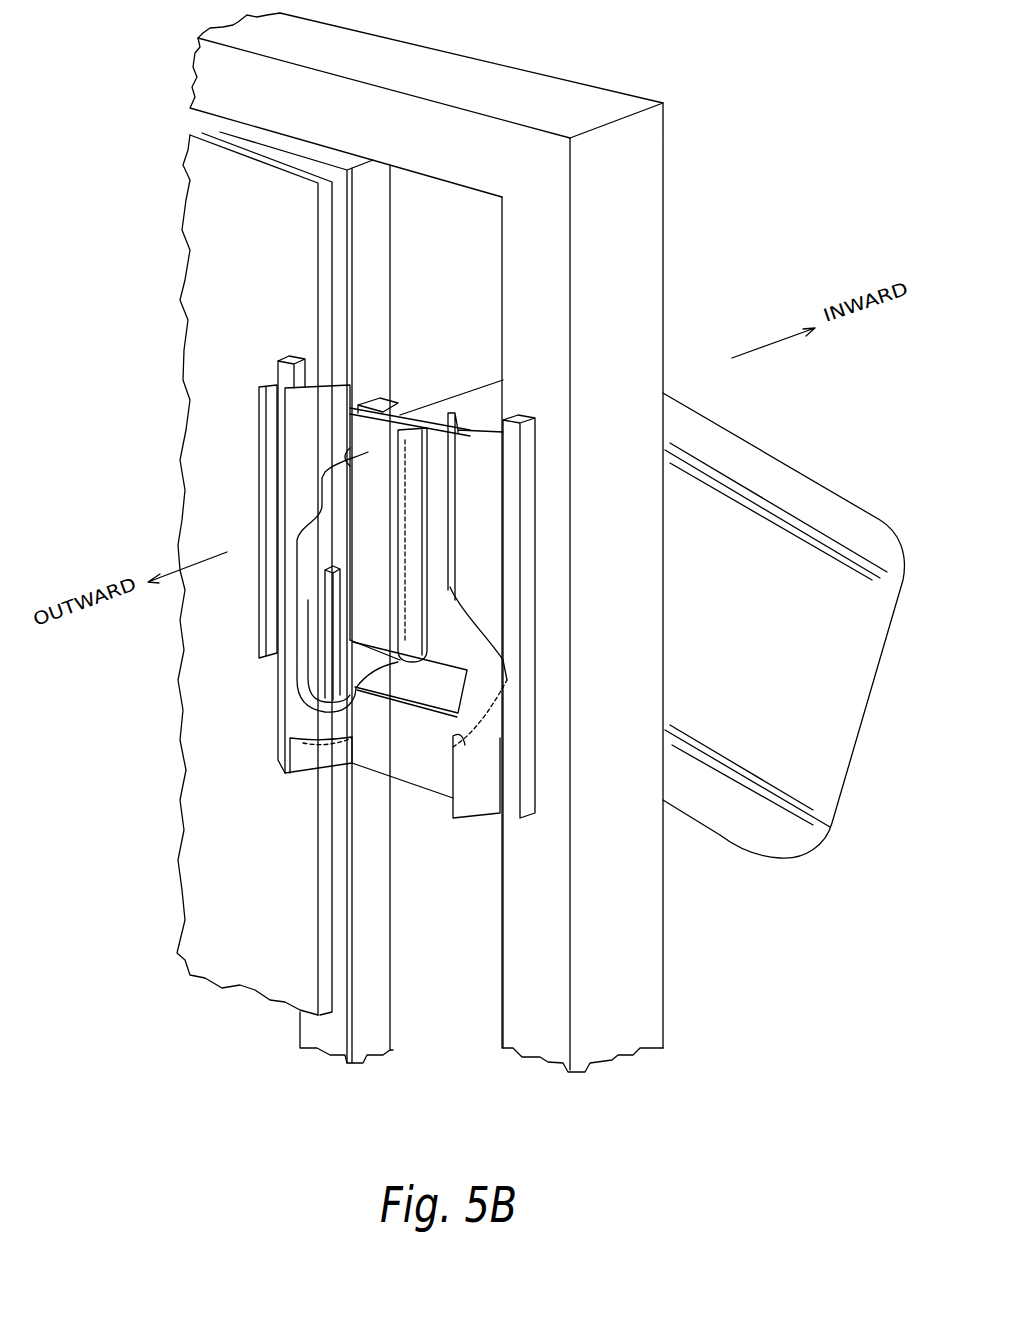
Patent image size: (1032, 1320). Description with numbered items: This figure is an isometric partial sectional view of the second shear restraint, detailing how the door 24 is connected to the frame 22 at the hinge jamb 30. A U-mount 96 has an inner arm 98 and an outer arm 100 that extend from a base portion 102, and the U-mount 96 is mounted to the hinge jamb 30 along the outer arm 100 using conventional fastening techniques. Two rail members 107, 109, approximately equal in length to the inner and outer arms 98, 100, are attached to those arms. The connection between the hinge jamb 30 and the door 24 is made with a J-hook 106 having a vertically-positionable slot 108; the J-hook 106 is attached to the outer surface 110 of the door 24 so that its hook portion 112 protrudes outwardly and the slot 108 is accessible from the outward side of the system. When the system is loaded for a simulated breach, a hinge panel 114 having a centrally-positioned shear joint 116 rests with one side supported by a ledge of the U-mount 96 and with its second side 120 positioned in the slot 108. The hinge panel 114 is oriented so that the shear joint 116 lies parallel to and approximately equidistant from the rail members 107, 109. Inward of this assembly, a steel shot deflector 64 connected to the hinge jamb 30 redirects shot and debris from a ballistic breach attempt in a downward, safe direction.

The frame 22 is at (473, 75).
The door 24 is at (200, 237).
The hinge jamb 30 is at (629, 282).
The steel shot deflector 64 is at (488, 390).
The U-mount 96 is at (525, 803).
The inner arm 98 is at (293, 358).
The outer arm 100 is at (516, 416).
The base portion 102 is at (421, 754).
The J-hook 106 is at (362, 662).
The rail member 107 is at (305, 760).
The slot 108 is at (362, 597).
The rail member 109 is at (499, 801).
The outer surface 110 is at (375, 240).
The hook portion 112 is at (333, 568).
The hinge panel 114 is at (348, 462).
The shear joint 116 is at (412, 653).
The second side 120 is at (388, 486).